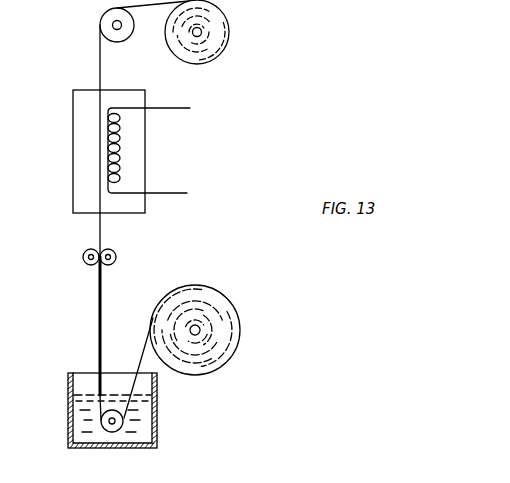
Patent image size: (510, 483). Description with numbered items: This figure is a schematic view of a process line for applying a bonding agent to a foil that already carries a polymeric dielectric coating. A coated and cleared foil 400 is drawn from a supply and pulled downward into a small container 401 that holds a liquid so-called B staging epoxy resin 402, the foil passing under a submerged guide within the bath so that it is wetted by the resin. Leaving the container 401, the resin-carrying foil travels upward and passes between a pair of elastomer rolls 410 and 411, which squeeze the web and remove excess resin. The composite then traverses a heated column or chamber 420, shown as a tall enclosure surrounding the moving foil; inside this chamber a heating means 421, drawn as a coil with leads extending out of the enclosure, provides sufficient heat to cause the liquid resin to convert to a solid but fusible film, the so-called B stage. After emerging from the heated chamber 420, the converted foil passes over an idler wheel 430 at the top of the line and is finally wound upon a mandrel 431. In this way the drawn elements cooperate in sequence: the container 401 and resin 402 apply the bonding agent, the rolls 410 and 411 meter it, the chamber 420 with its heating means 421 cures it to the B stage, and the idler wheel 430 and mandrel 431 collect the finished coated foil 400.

The coated and cleared foil 400 is at (142, 352).
The container 401 is at (157, 438).
The B staging epoxy resin 402 is at (133, 410).
The elastomer roll 410 is at (117, 255).
The elastomer roll 411 is at (82, 255).
The heated column or chamber 420 is at (73, 133).
The heating means 421 is at (120, 150).
The idler wheel 430 is at (101, 18).
The mandrel 431 is at (222, 40).